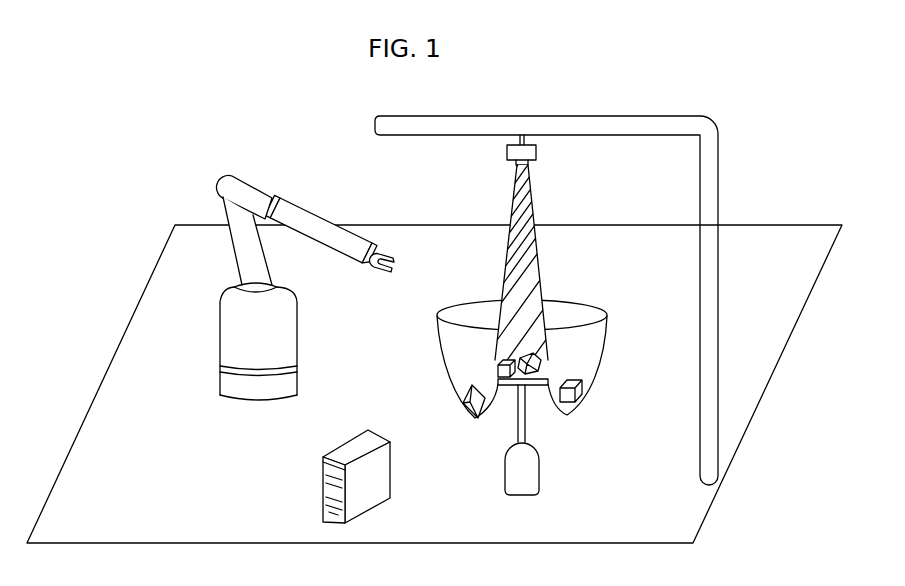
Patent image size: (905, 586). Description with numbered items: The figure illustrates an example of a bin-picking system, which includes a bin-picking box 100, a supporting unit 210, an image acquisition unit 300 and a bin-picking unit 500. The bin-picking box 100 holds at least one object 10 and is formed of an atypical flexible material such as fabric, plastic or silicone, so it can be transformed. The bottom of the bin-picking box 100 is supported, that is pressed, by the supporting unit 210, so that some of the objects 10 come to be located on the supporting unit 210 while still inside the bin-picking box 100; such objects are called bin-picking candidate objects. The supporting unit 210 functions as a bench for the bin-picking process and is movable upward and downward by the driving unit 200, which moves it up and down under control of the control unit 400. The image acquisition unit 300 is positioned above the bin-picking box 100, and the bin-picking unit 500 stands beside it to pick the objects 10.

The object 10 is at (583, 392).
The bin-picking box 100 is at (600, 345).
The driving unit 200 is at (530, 427).
The supporting unit 210 is at (505, 404).
The image acquisition unit 300 is at (537, 152).
The control unit 400 is at (357, 430).
The bin-picking unit 500 is at (259, 181).